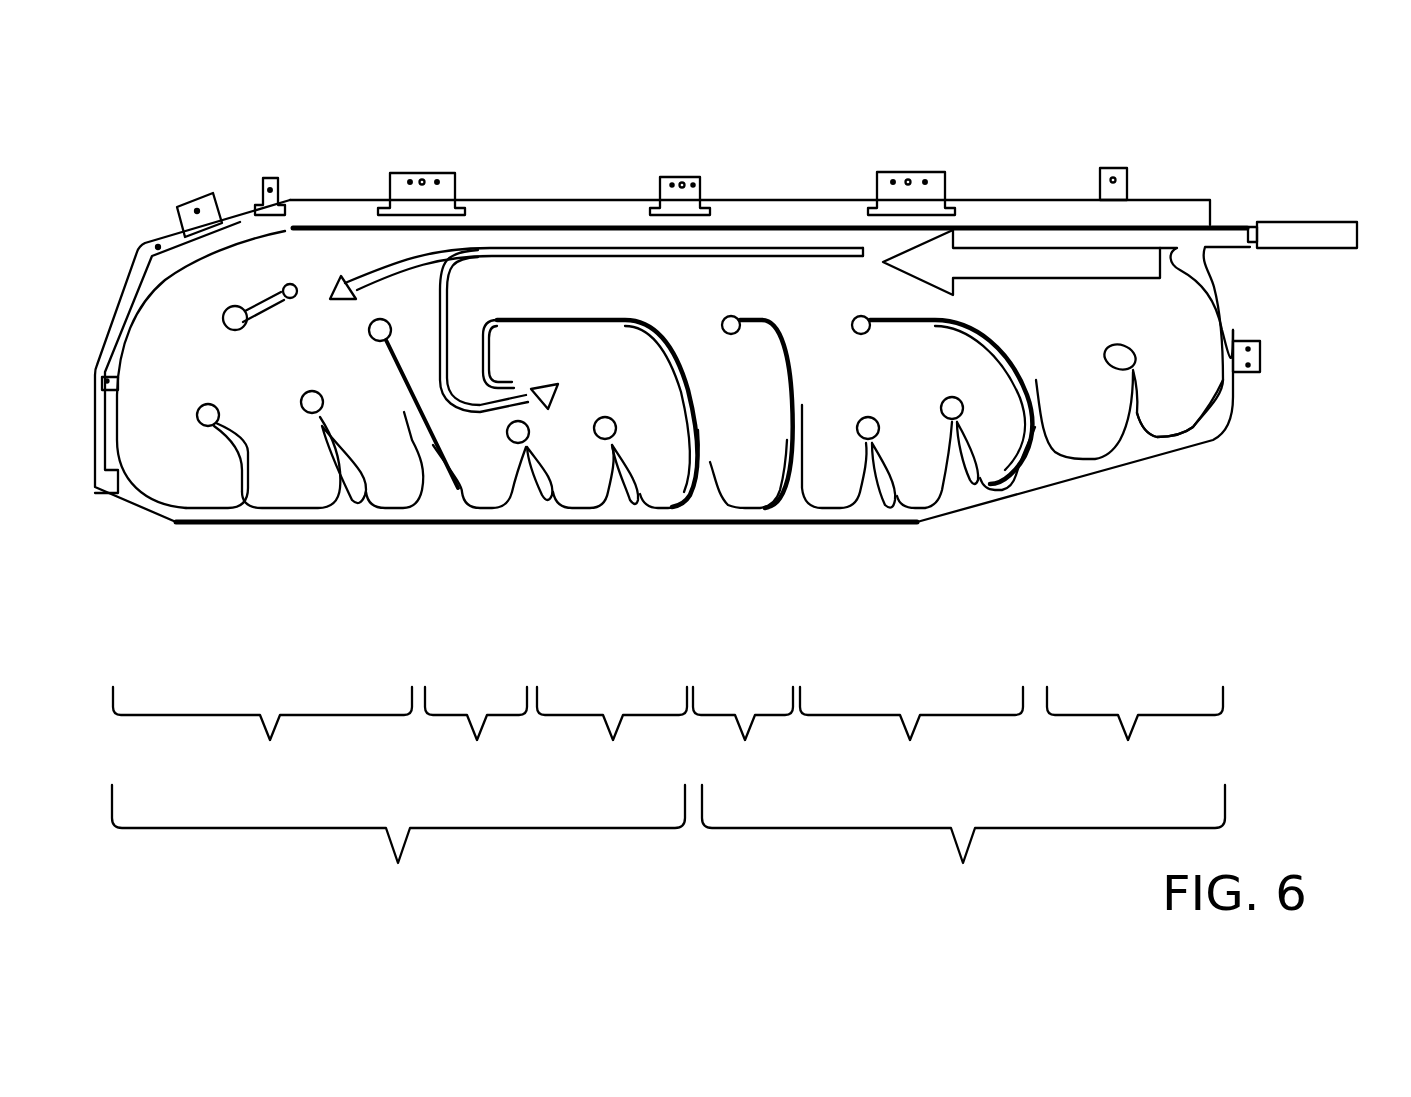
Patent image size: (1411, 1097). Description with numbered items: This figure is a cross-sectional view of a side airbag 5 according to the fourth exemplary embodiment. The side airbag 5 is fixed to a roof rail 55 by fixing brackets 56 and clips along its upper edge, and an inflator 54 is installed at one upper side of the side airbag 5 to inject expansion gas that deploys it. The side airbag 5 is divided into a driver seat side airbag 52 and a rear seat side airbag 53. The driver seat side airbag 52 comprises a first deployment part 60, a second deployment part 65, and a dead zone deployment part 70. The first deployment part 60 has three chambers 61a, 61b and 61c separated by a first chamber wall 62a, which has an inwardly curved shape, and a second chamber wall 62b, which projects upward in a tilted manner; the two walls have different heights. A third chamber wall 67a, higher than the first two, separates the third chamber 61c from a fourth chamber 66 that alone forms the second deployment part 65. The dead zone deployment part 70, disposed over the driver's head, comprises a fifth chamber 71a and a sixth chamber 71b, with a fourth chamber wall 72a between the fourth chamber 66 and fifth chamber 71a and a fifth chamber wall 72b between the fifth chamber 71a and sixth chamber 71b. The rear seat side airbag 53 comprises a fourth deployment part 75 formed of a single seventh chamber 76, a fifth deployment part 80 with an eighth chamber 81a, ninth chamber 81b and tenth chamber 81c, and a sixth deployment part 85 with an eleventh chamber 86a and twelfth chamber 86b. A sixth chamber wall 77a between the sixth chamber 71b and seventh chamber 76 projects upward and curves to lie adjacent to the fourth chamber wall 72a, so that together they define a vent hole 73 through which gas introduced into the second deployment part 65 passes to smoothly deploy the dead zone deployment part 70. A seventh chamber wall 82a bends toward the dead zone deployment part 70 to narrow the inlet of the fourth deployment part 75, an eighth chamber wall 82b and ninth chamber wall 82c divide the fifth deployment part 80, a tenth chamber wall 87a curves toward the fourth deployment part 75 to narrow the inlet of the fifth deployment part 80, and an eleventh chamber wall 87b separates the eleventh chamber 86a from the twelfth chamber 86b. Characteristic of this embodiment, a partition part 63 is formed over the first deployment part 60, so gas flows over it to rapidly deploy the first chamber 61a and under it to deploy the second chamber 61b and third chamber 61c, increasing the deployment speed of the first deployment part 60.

The side airbag 5 is at (1283, 546).
The driver seat side airbag 52 is at (398, 846).
The rear seat side airbag 53 is at (963, 846).
The inflator 54 is at (1298, 230).
The roof rail 55 is at (582, 207).
The mounting bracket 56 is at (682, 175).
The first deployment part 60 is at (262, 737).
The first chamber 61a is at (195, 463).
The second chamber 61b is at (315, 480).
The third chamber 61c is at (395, 480).
The first chamber wall 62a is at (230, 490).
The second chamber wall 62b is at (358, 483).
The partition part 63 is at (226, 313).
The second deployment part 65 is at (476, 733).
The fourth chamber 66 is at (490, 488).
The third chamber wall 67a is at (465, 495).
The dead zone deployment part 70 is at (612, 731).
The fifth chamber 71a is at (583, 483).
The sixth chamber 71b is at (672, 483).
The fourth chamber wall 72a is at (548, 490).
The fifth chamber wall 72b is at (633, 483).
The vent hole 73 is at (560, 398).
The fourth deployment part 75 is at (743, 729).
The seventh chamber 76 is at (747, 483).
The sixth chamber wall 77a is at (612, 322).
The fifth deployment part 80 is at (911, 733).
The eighth chamber 81a is at (847, 483).
The ninth chamber 81b is at (932, 473).
The tenth chamber 81c is at (1017, 450).
The seventh chamber wall 82a is at (805, 395).
The eighth chamber wall 82b is at (893, 490).
The ninth chamber wall 82c is at (960, 470).
The sixth deployment part 85 is at (1135, 734).
The eleventh chamber 86a is at (1110, 432).
The twelfth chamber 86b is at (1205, 393).
The tenth chamber wall 87a is at (1012, 343).
The eleventh chamber wall 87b is at (1140, 397).